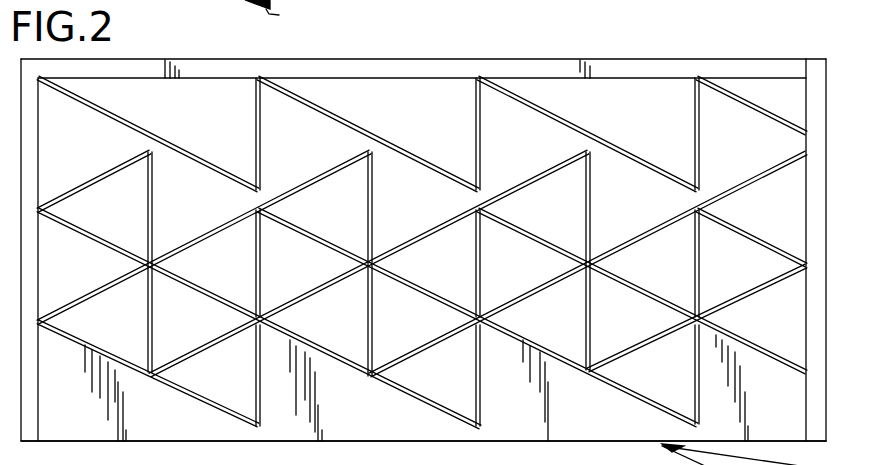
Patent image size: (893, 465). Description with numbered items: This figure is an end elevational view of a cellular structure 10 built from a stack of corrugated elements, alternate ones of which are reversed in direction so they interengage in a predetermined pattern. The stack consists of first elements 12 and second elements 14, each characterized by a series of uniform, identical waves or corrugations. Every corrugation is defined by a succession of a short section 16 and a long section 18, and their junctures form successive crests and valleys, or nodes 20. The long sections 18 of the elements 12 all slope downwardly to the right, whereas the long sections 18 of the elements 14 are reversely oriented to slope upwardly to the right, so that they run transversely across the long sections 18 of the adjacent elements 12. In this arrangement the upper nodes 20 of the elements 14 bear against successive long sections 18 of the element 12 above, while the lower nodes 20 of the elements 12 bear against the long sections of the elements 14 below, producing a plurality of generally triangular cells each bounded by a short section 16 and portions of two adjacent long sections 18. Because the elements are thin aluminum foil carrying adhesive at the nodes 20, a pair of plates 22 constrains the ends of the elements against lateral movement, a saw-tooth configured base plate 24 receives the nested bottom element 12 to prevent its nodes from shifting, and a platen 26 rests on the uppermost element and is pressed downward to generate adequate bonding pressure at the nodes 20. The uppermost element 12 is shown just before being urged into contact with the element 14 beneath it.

The cellular structure 10 is at (534, 274).
The first element 12 is at (134, 116).
The second element 14 is at (153, 212).
The short section 16 is at (261, 130).
The long section 18 is at (398, 147).
The node 20 is at (712, 172).
The plate 22 is at (806, 317).
The base plate 24 is at (336, 440).
The platen 26 is at (388, 64).